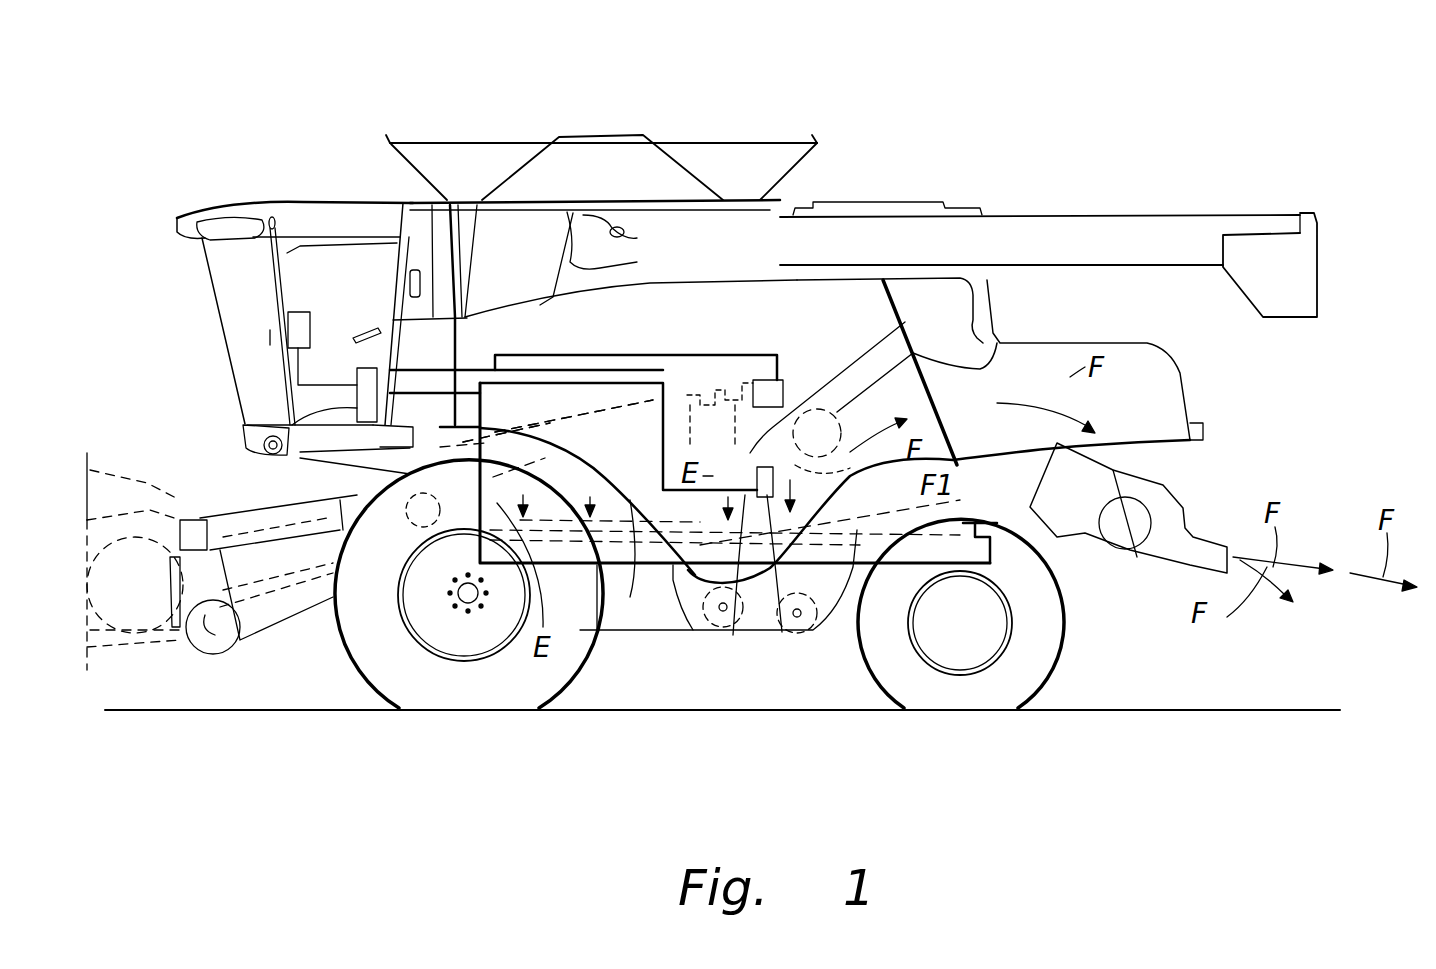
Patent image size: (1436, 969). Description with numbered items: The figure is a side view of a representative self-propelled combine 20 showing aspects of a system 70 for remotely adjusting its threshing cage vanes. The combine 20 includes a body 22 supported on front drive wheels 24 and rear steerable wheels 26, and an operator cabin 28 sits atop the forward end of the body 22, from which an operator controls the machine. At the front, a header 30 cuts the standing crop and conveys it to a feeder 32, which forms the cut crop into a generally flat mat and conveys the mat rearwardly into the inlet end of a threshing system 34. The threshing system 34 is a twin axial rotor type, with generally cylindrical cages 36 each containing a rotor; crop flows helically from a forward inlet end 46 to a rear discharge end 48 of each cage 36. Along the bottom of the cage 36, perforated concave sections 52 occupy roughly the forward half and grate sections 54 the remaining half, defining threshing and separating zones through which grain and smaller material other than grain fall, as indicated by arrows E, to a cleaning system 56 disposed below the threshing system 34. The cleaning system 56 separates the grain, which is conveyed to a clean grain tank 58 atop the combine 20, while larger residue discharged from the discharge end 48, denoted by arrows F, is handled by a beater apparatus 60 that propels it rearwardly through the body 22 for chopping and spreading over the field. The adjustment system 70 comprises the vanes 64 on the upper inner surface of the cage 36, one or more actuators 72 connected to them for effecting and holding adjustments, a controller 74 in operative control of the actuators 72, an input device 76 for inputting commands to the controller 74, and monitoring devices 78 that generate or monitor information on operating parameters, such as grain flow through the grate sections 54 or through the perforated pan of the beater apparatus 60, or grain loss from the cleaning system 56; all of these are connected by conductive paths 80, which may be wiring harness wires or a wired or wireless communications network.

The self-propelled combine 20 is at (1050, 118).
The body 22 is at (833, 280).
The front drive wheels 24 is at (357, 673).
The rear steerable wheels 26 is at (873, 673).
The operator cabin 28 is at (240, 208).
The header 30 is at (140, 648).
The feeder 32 is at (263, 640).
The threshing system 34 is at (574, 420).
The threshing cage 36 is at (558, 421).
The inlet end 46 is at (433, 453).
The discharge end 48 is at (903, 321).
The perforated concave sections 52 is at (487, 533).
The grate sections 54 is at (632, 597).
The cleaning system 56 is at (673, 580).
The clean grain tank 58 is at (657, 177).
The beater apparatus 60 is at (912, 357).
The vanes 64 is at (753, 383).
The system 70 is at (285, 337).
The actuator 72 is at (780, 390).
The controller 74 is at (243, 426).
The input device 76 is at (295, 313).
The monitoring device 78 is at (790, 605).
The conductive paths 80 is at (288, 383).